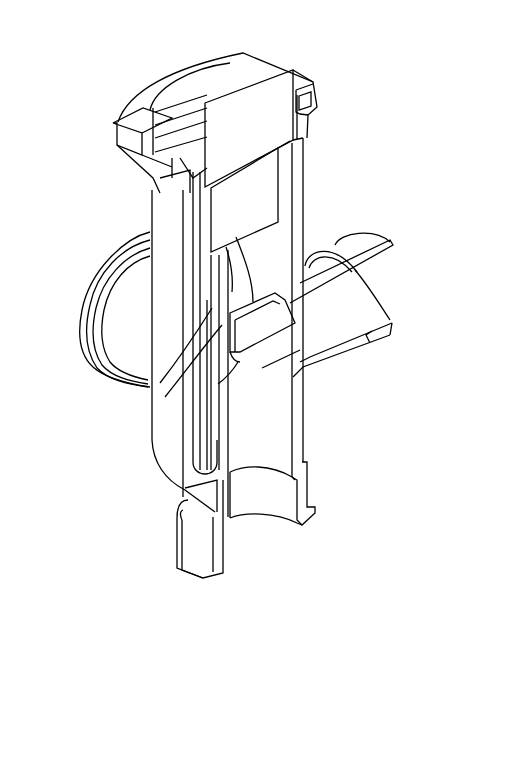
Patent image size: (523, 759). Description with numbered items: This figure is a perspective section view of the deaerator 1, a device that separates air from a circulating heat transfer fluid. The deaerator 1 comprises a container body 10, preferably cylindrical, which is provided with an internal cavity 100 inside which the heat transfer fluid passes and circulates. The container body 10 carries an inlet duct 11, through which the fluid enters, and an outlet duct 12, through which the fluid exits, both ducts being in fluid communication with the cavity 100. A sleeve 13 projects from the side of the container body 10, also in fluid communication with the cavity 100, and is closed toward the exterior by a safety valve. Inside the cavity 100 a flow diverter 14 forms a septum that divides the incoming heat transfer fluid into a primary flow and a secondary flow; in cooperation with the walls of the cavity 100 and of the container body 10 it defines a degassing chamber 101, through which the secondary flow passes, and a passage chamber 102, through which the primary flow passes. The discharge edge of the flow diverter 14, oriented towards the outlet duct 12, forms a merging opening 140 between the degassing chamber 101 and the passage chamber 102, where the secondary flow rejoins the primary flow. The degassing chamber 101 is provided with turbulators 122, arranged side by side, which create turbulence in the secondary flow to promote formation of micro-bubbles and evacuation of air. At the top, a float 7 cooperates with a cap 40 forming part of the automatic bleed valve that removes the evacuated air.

The deaerator 1 is at (142, 57).
The cap 40 is at (277, 133).
The container body 10 is at (310, 138).
The float 7 is at (253, 212).
The degassing chamber 101 is at (263, 258).
The inlet duct 11 is at (393, 247).
The cavity 100 is at (298, 345).
The flow diverter 14 is at (268, 362).
The passage chamber 102 is at (262, 378).
The sleeve 13 is at (118, 317).
The turbulator 122 is at (165, 397).
The merging opening 140 is at (195, 421).
The outlet duct 12 is at (200, 542).